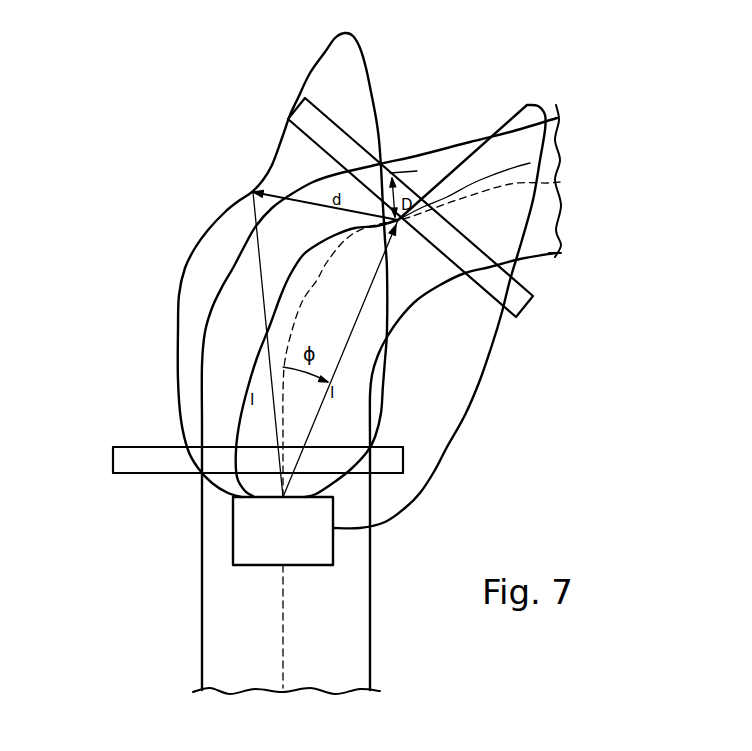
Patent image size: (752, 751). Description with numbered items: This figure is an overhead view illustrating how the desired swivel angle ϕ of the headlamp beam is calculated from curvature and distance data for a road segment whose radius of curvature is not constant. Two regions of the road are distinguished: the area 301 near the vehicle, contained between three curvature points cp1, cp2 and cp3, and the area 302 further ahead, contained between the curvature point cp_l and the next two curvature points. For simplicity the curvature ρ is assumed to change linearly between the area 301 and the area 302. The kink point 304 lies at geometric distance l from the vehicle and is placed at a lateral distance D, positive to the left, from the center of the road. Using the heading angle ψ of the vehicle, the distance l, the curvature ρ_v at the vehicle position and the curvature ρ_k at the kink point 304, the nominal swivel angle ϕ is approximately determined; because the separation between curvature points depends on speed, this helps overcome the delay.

The area 301 is at (133, 447).
The area 302 is at (533, 296).
The kink point 304 is at (530, 163).